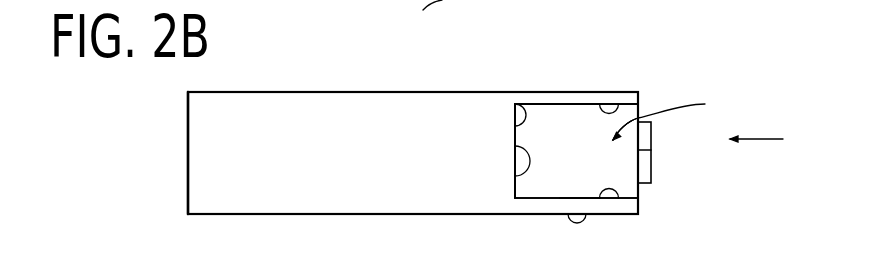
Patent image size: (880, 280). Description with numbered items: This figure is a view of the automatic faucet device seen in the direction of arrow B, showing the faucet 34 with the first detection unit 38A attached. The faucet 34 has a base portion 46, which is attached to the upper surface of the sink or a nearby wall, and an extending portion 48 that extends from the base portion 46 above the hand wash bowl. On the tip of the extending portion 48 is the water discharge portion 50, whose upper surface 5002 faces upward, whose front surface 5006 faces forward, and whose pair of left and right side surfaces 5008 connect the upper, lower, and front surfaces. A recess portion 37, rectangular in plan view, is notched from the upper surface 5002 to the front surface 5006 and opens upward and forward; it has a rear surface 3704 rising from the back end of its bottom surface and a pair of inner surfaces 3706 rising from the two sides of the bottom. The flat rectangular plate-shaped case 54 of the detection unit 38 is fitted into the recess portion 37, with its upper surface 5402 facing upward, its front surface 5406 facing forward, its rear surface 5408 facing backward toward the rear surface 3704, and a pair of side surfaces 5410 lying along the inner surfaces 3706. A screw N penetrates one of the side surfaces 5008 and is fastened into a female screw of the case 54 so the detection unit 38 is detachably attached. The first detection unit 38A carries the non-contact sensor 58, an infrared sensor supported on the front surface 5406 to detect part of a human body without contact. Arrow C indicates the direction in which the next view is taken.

The faucet 34 is at (330, 70).
The extending portion 48 is at (277, 125).
The base portion 46 is at (188, 152).
The recess portion 37 is at (517, 148).
The rear surface 5408 is at (518, 172).
The rear surface 3704 is at (525, 110).
The water discharge portion 50 is at (642, 100).
The front surface 5006 is at (576, 151).
The upper surface 5002 is at (553, 100).
The side surfaces 5008 is at (538, 88).
The side surfaces 5410 is at (582, 102).
The inner surfaces 3706 is at (618, 100).
The first detection unit 38A is at (721, 116).
The detection unit 38 is at (625, 129).
The case 54 is at (625, 129).
The non-contact sensor 58 is at (651, 129).
The front surface 5406 is at (651, 150).
The upper surface 5402 is at (602, 168).
The screw N is at (577, 224).
The arrow C is at (756, 153).